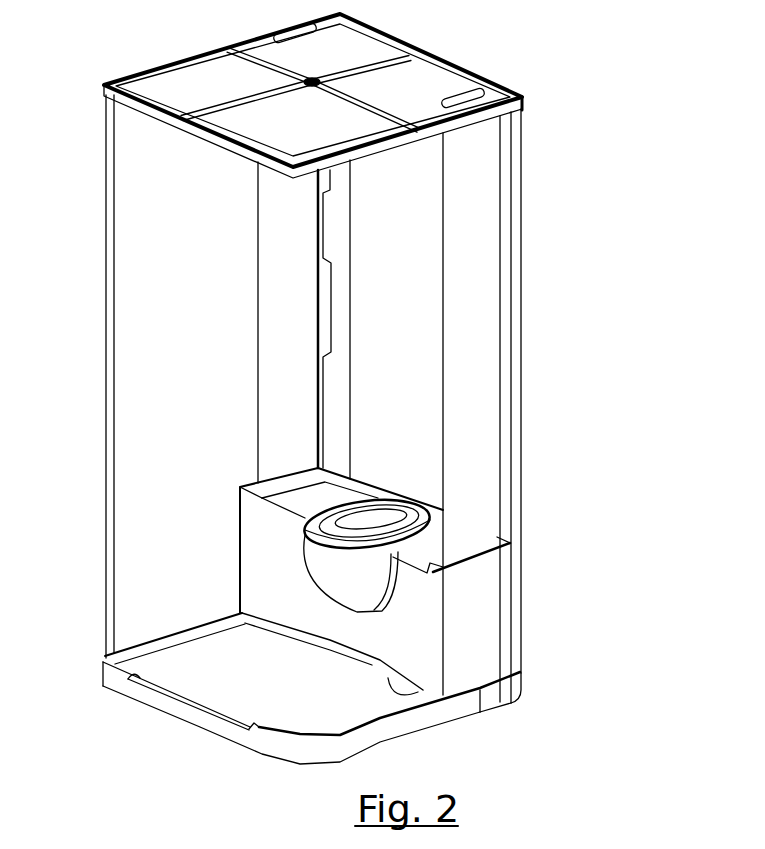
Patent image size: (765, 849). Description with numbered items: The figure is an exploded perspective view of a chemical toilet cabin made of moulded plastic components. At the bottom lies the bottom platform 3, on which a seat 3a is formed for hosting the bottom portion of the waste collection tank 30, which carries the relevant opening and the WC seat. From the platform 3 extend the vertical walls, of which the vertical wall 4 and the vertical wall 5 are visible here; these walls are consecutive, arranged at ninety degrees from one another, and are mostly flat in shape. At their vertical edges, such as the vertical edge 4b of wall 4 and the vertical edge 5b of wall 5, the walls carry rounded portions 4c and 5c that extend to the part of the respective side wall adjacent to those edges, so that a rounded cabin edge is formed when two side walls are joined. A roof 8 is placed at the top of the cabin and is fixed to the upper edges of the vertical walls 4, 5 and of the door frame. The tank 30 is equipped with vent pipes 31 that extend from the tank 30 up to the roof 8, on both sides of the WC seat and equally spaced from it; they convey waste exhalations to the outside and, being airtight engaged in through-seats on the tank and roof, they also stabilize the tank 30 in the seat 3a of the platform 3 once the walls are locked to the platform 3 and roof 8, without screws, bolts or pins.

The bottom platform 3 is at (312, 728).
The seat 3a is at (393, 690).
The vertical wall 4 is at (102, 376).
The vertical edge 4b is at (122, 262).
The rounded portion 4c is at (108, 315).
The vertical wall 5 is at (521, 406).
The vertical edge 5b is at (508, 347).
The rounded portion 5c is at (522, 387).
The roof 8 is at (440, 75).
The waste collection tank 30 is at (428, 612).
The vent pipe 31 is at (552, 197).